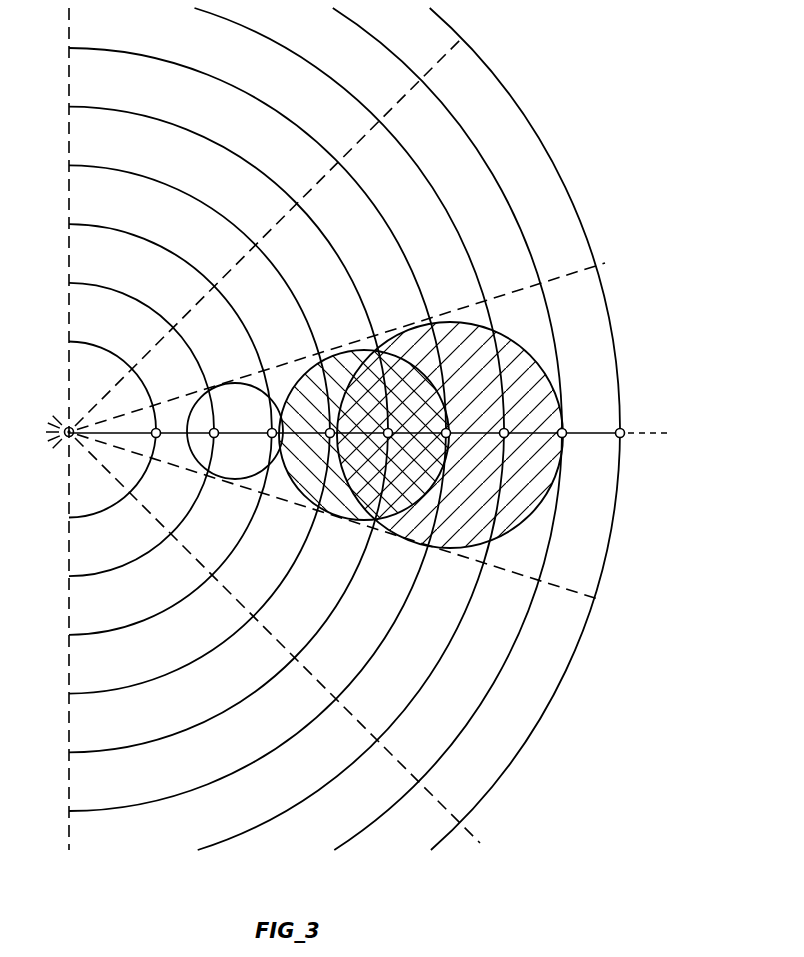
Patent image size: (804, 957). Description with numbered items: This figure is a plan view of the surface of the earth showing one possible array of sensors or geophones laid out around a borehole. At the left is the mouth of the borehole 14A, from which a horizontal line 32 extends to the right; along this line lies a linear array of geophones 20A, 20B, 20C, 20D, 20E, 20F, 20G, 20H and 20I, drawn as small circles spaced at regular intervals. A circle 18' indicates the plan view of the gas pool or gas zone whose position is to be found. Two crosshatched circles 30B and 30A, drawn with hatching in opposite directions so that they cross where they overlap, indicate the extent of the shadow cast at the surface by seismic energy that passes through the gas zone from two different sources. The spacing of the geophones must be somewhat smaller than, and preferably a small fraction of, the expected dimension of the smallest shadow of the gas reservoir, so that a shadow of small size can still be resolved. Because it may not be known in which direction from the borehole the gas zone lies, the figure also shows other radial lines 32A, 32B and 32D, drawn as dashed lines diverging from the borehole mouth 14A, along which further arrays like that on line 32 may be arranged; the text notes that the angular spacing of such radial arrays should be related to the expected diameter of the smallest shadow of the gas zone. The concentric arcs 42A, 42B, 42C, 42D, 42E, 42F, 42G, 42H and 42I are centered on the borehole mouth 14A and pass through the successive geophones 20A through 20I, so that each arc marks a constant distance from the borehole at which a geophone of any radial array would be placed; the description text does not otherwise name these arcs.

The mouth of the borehole 14A is at (65, 428).
The plan view of the gas pool or gas zone 18' is at (235, 458).
The geophone 20A is at (156, 428).
The geophone 20B is at (214, 428).
The geophone 20C is at (272, 428).
The geophone 20D is at (330, 428).
The geophone 20E is at (388, 428).
The geophone 20F is at (447, 428).
The geophone 20G is at (504, 428).
The geophone 20H is at (562, 428).
The geophone 20I is at (624, 428).
The crosshatched circle 30A is at (447, 549).
The crosshatched circle 30B is at (337, 516).
The linear array of geophones 32 is at (630, 438).
The radial line 32A is at (613, 270).
The radial line 32B is at (470, 30).
The radial line 32D is at (74, 38).
The concentric arc 42A is at (131, 494).
The concentric arc 42B is at (172, 534).
The concentric arc 42C is at (213, 575).
The concentric arc 42D is at (254, 616).
The concentric arc 42E is at (295, 657).
The concentric arc 42F is at (336, 699).
The concentric arc 42G is at (377, 741).
The concentric arc 42H is at (418, 782).
The concentric arc 42I is at (459, 824).